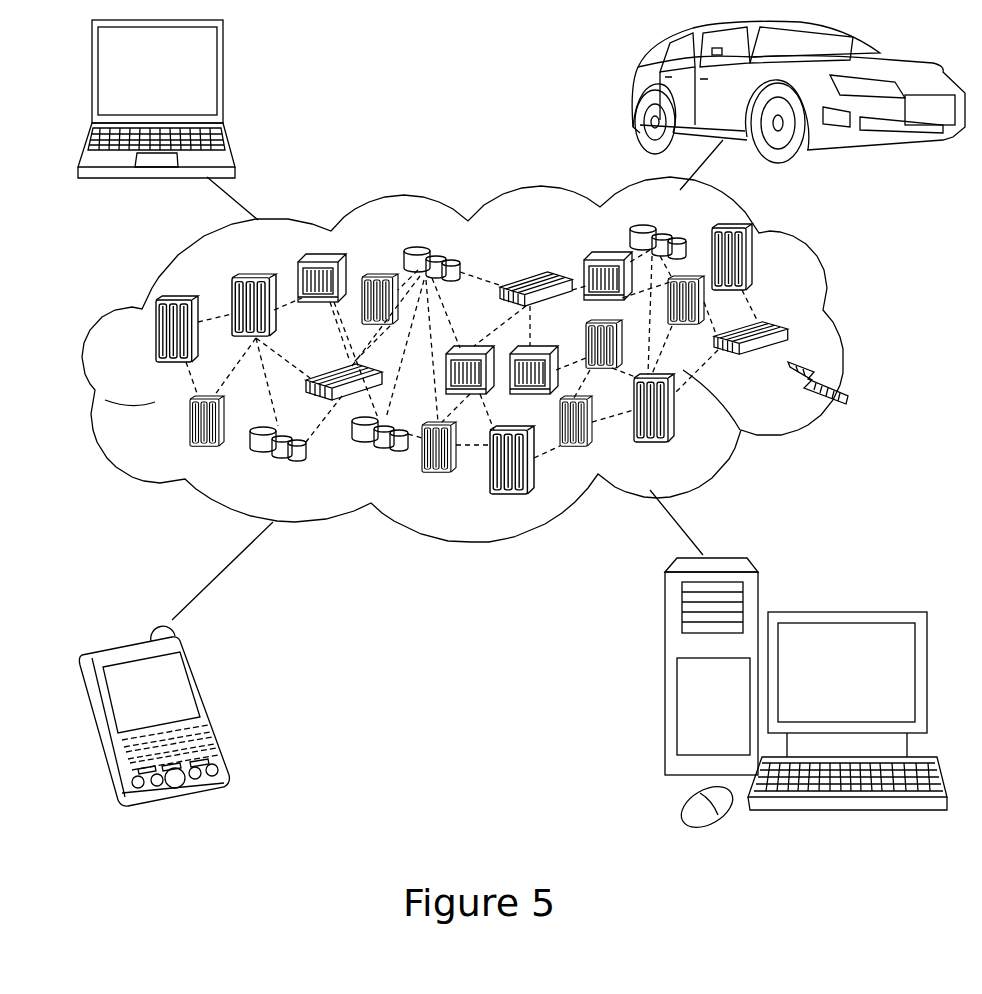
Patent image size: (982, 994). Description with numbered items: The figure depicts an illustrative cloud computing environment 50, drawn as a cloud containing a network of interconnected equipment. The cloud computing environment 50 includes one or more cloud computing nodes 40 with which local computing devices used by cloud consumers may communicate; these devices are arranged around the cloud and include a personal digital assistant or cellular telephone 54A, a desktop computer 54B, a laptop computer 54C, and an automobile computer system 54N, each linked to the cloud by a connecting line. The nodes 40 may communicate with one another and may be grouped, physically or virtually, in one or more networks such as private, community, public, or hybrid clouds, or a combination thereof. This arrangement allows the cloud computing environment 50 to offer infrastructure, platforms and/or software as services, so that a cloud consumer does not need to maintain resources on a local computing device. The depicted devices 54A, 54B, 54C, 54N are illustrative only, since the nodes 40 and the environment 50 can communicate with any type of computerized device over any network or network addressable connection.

The cloud computing environment 50 is at (845, 337).
The cloud computing node 40 is at (846, 400).
The personal digital assistant (PDA) or cellular telephone 54A is at (215, 703).
The desktop computer 54B is at (843, 612).
The laptop computer 54C is at (223, 77).
The automobile computer system 54N is at (638, 90).